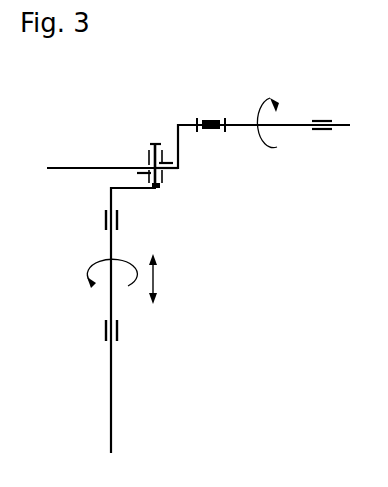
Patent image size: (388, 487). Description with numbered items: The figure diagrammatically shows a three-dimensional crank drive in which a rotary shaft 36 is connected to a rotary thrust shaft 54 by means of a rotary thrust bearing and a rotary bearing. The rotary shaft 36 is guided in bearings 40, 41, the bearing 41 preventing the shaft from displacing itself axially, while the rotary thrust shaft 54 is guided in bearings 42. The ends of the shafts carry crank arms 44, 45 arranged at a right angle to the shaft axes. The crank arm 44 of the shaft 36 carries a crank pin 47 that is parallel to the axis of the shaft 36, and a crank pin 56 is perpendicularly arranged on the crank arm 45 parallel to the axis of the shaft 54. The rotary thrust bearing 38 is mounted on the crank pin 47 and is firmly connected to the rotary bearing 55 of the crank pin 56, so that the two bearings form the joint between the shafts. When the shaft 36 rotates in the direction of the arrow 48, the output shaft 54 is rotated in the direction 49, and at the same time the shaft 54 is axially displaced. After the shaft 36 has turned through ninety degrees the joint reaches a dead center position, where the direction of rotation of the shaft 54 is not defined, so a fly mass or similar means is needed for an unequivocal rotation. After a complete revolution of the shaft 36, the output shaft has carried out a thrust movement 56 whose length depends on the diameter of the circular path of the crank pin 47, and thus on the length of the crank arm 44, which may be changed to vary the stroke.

The rotary shaft 36 is at (346, 130).
The rotary thrust bearing 38 is at (142, 162).
The bearing 40 is at (318, 120).
The bearing 41 is at (212, 118).
The bearing 42 is at (105, 218).
The crank arm 44 is at (178, 147).
The crank arm 45 is at (132, 192).
The crank pin 47 is at (55, 165).
The arrow 48 is at (265, 97).
The direction of rotation 49 is at (84, 276).
The rotary thrust shaft 54 is at (112, 400).
The rotary bearing 55 is at (163, 180).
The crank pin / thrust movement 56 is at (152, 146).